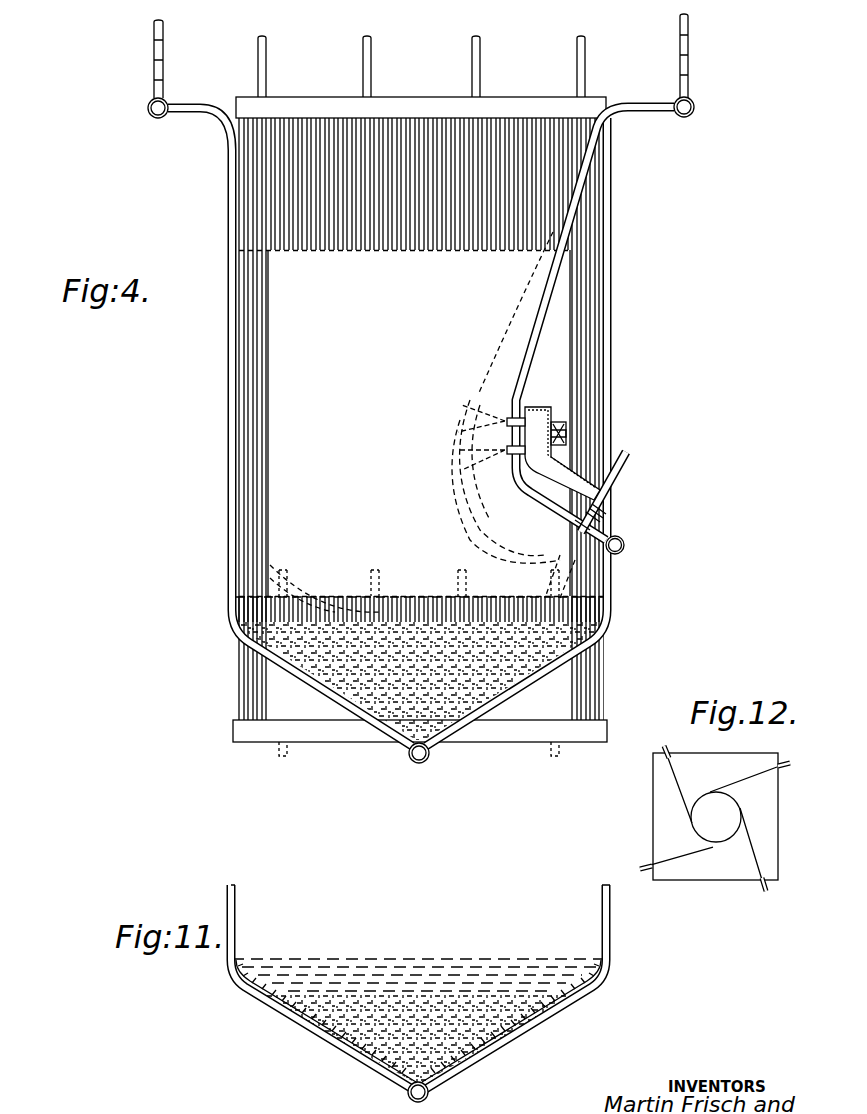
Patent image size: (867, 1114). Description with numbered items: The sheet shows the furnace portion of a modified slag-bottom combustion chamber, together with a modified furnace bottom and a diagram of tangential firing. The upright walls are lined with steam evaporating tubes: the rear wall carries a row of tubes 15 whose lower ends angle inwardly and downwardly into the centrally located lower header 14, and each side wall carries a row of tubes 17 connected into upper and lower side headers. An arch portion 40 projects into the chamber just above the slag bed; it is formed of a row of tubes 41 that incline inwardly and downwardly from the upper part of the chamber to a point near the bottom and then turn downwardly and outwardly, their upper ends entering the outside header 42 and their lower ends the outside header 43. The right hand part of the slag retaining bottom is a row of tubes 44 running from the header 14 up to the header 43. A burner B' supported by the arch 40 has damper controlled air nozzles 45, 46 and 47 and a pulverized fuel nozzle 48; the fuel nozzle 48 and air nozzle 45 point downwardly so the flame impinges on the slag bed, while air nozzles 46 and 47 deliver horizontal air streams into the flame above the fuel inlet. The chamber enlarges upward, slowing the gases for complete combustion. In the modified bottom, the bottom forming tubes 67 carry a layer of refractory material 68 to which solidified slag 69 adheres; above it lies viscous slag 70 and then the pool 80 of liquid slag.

In FIG. 4, the lower header 14 is at (417, 765).
In FIG. 4, the row of tubes 15 is at (232, 384).
In FIG. 4, the row of tubes 17 is at (416, 249).
In FIG. 4, the arch portion 40 is at (562, 462).
In FIG. 4, the row of tubes 41 is at (536, 307).
In FIG. 4, the outside header 42 is at (696, 107).
In FIG. 4, the outside header 43 is at (626, 545).
In FIG. 4, the row of tubes 44 is at (503, 722).
In FIG. 4, the air nozzle 45 is at (585, 521).
In FIG. 4, the air nozzle 46 is at (507, 452).
In FIG. 4, the air nozzle 47 is at (507, 425).
In FIG. 4, the pulverized fuel nozzle 48 is at (632, 463).
In FIG. 4, the burner B' is at (594, 431).
In FIG. 11, the bottom forming tubes 67 is at (322, 1036).
In FIG. 11, the layer of refractory material 68 is at (293, 1008).
In FIG. 11, the solidified slag 69 is at (483, 1050).
In FIG. 11, the viscous slag 70 is at (543, 1012).
In FIG. 11, the pool of liquid slag 80 is at (527, 938).